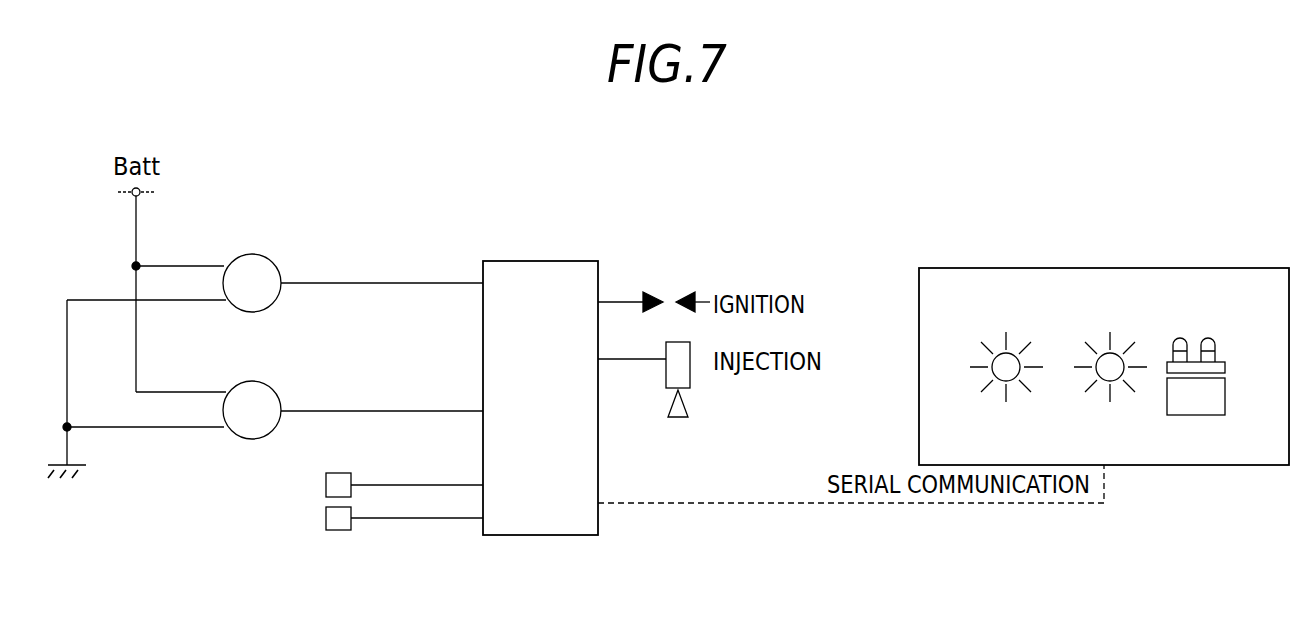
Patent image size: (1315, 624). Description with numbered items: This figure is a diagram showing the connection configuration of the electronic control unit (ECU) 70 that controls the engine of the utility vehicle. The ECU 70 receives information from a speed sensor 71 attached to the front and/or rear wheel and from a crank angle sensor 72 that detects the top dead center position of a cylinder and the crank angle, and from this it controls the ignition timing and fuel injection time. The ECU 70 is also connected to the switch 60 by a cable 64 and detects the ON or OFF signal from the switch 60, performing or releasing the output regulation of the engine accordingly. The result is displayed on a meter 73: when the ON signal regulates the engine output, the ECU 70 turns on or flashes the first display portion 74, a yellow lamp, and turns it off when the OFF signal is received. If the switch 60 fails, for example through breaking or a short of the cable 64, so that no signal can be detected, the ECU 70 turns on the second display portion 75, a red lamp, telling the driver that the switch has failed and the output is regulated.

The switch 60 is at (252, 253).
The cable 64 is at (398, 284).
The electronic control unit 70 is at (539, 260).
The speed sensor 71 is at (325, 486).
The crank angle sensor 72 is at (325, 519).
The meter 73 is at (1157, 268).
The first display portion 74 is at (1000, 396).
The second display portion 75 is at (1117, 397).